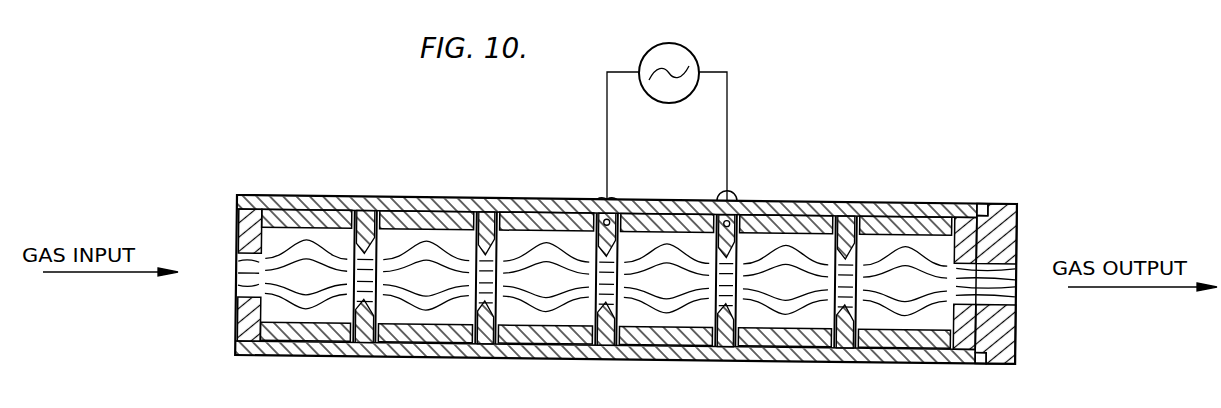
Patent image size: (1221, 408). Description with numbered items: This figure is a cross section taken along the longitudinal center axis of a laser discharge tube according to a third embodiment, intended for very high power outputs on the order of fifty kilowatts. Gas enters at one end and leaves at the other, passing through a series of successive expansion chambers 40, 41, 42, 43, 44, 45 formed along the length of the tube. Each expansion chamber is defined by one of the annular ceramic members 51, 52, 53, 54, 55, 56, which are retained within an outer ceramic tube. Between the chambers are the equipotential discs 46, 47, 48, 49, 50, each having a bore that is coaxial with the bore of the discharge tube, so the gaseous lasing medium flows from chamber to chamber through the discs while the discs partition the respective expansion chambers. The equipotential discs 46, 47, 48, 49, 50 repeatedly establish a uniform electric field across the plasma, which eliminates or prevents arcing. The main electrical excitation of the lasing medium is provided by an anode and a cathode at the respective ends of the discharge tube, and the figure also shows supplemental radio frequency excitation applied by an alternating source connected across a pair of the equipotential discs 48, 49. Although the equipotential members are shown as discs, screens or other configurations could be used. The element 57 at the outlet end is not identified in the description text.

The expansion chamber 40 is at (276, 233).
The expansion chamber 41 is at (393, 237).
The expansion chamber 42 is at (515, 235).
The expansion chamber 43 is at (635, 235).
The expansion chamber 44 is at (762, 242).
The expansion chamber 45 is at (878, 247).
The equipotential disc 46 is at (367, 333).
The equipotential disc 47 is at (483, 337).
The equipotential disc 48 is at (607, 335).
The equipotential disc 49 is at (725, 338).
The equipotential disc 50 is at (848, 337).
The annular ceramic member 51 is at (343, 212).
The annular ceramic member 52 is at (460, 212).
The annular ceramic member 53 is at (575, 212).
The annular ceramic member 54 is at (695, 222).
The annular ceramic member 55 is at (817, 220).
The annular ceramic member 56 is at (942, 222).
The outlet end plug 57 is at (955, 357).